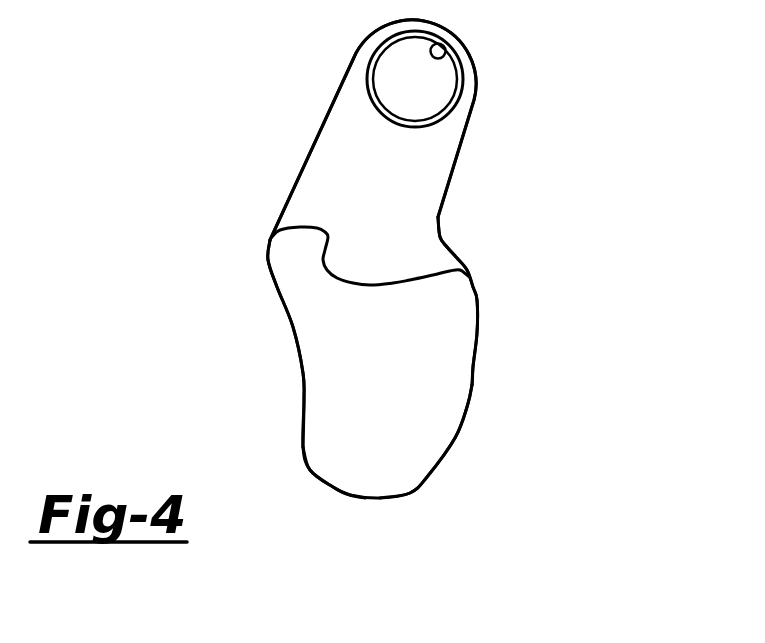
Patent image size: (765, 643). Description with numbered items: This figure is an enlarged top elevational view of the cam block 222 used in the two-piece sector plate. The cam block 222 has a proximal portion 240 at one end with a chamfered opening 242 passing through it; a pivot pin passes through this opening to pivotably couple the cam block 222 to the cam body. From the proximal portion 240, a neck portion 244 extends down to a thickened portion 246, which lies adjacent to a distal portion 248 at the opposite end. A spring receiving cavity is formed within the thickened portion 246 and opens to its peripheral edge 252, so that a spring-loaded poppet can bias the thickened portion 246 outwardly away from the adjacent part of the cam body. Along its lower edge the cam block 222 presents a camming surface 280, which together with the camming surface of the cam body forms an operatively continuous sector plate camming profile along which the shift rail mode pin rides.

The cam block 222 is at (474, 217).
The proximal portion 240 is at (467, 90).
The chamfered opening 242 is at (442, 57).
The neck portion 244 is at (325, 183).
The thickened portion 246 is at (432, 343).
The distal portion 248 is at (337, 457).
The peripheral edge 252 is at (302, 400).
The camming surface 280 is at (455, 438).